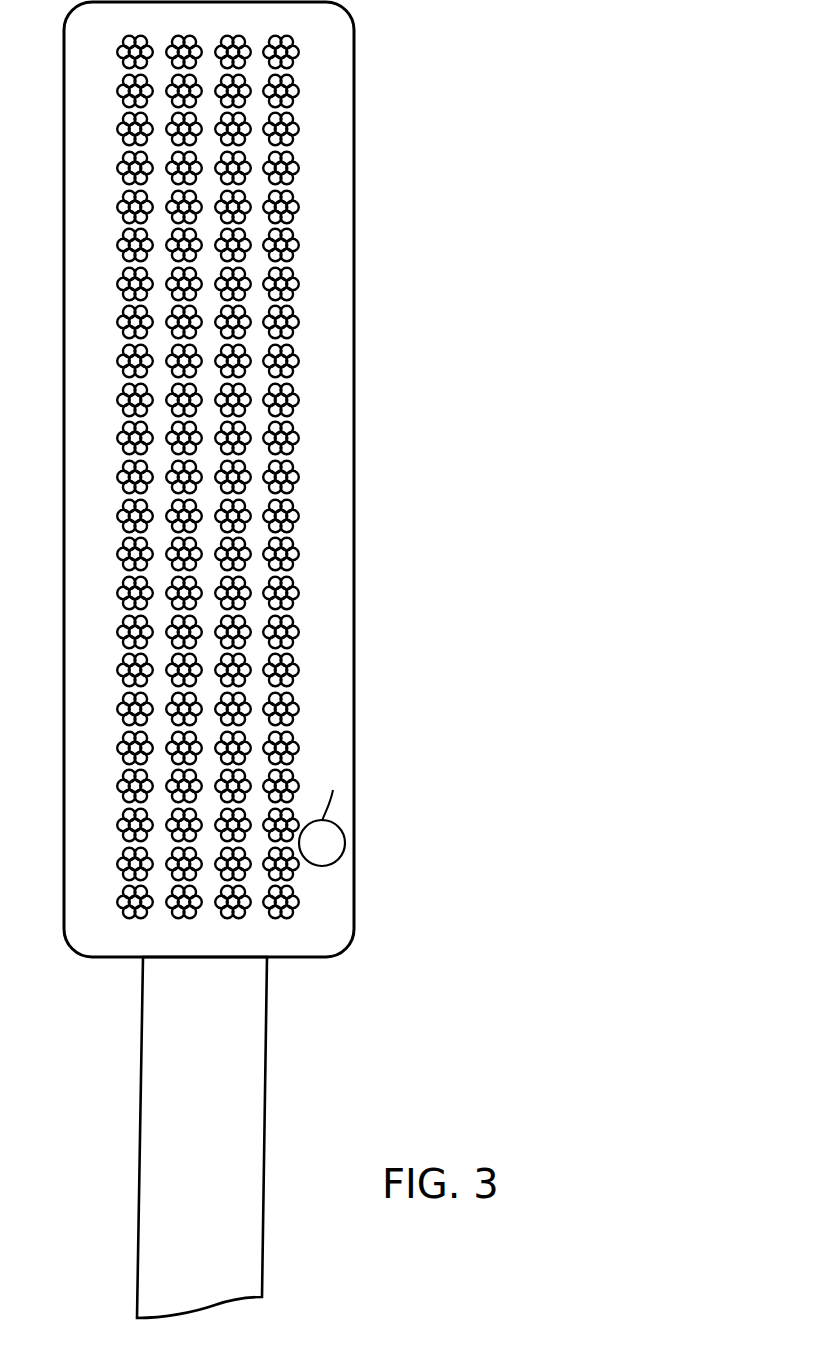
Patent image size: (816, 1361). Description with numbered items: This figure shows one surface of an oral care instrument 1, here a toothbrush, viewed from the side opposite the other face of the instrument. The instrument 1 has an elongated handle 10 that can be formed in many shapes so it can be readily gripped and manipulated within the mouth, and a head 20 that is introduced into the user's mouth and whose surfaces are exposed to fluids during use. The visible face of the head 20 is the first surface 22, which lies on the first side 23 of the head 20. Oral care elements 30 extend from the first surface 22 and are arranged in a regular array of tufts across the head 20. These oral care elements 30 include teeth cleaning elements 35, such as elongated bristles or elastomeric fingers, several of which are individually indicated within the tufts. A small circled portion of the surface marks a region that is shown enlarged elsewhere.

The oral care instrument 1 is at (269, 660).
The elongated handle 10 is at (268, 1101).
The head 20 is at (218, 479).
The first surface 22 is at (358, 690).
The first side 23 is at (334, 420).
The oral care elements 30 is at (305, 163).
The teeth cleaning elements 35 is at (130, 304).